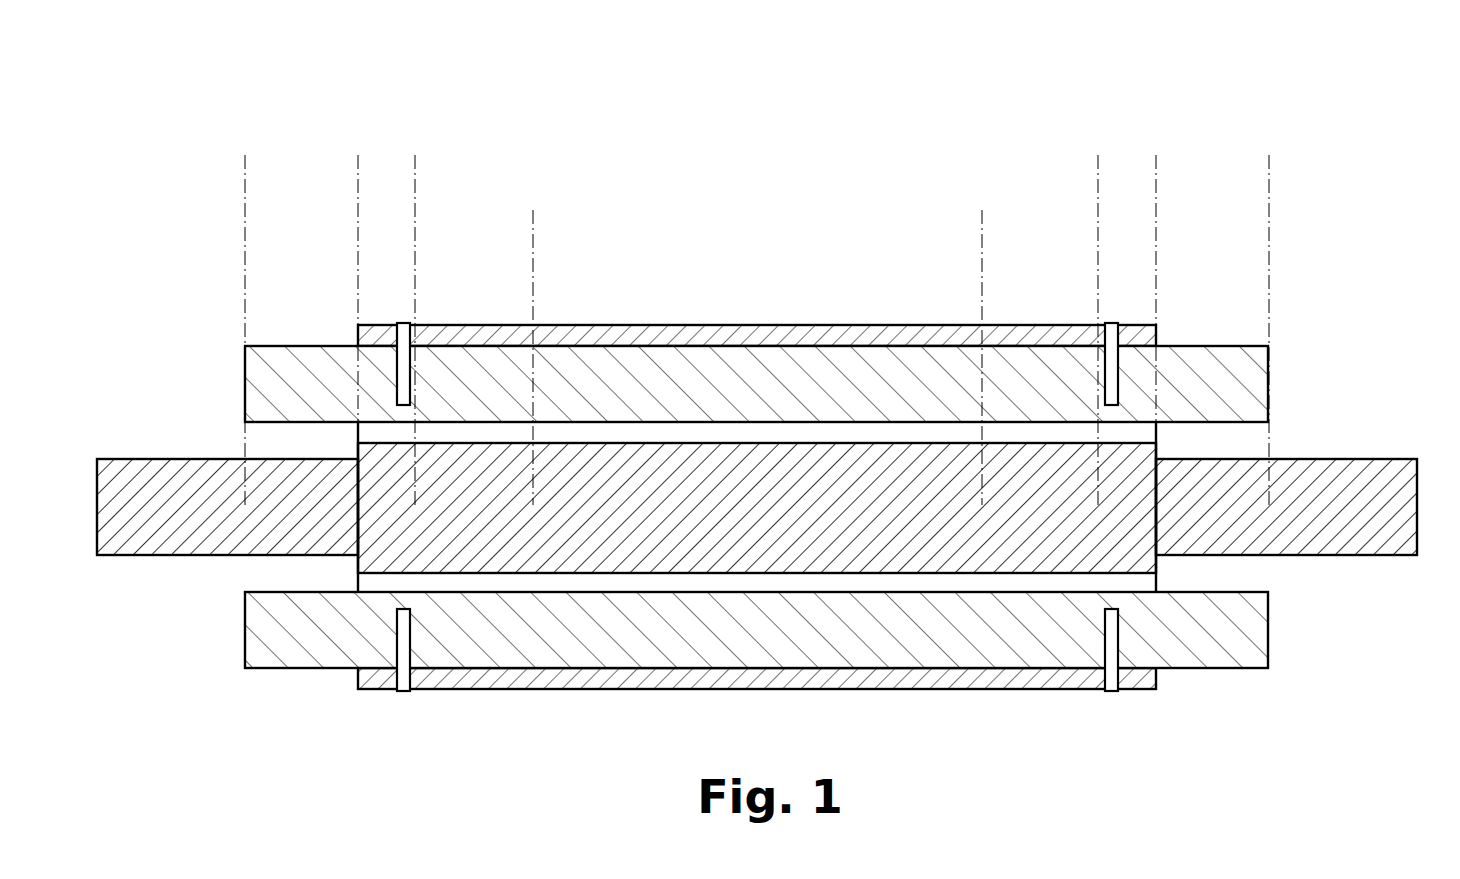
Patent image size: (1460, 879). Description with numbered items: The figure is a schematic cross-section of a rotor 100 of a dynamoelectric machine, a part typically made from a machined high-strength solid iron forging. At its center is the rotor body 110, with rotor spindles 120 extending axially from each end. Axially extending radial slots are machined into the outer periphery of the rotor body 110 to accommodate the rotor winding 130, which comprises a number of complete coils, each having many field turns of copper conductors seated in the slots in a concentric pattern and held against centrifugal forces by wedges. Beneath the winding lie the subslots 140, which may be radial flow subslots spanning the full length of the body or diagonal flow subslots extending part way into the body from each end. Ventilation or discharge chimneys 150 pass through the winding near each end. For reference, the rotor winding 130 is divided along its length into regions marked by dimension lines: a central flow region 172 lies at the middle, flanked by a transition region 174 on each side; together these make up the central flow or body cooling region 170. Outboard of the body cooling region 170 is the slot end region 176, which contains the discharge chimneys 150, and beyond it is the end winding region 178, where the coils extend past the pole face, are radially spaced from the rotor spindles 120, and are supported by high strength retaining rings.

The rotor 100 is at (233, 121).
The rotor body 110 is at (795, 676).
The rotor spindles 120 is at (205, 557).
The rotor winding 130 is at (1268, 380).
The subslots 140 is at (613, 430).
The discharge chimneys 150 is at (402, 325).
The body cooling region 170 is at (1098, 167).
The central flow region 172 is at (982, 277).
The transition region 174 is at (533, 223).
The slot end region 176 is at (415, 167).
The end winding region 178 is at (245, 167).